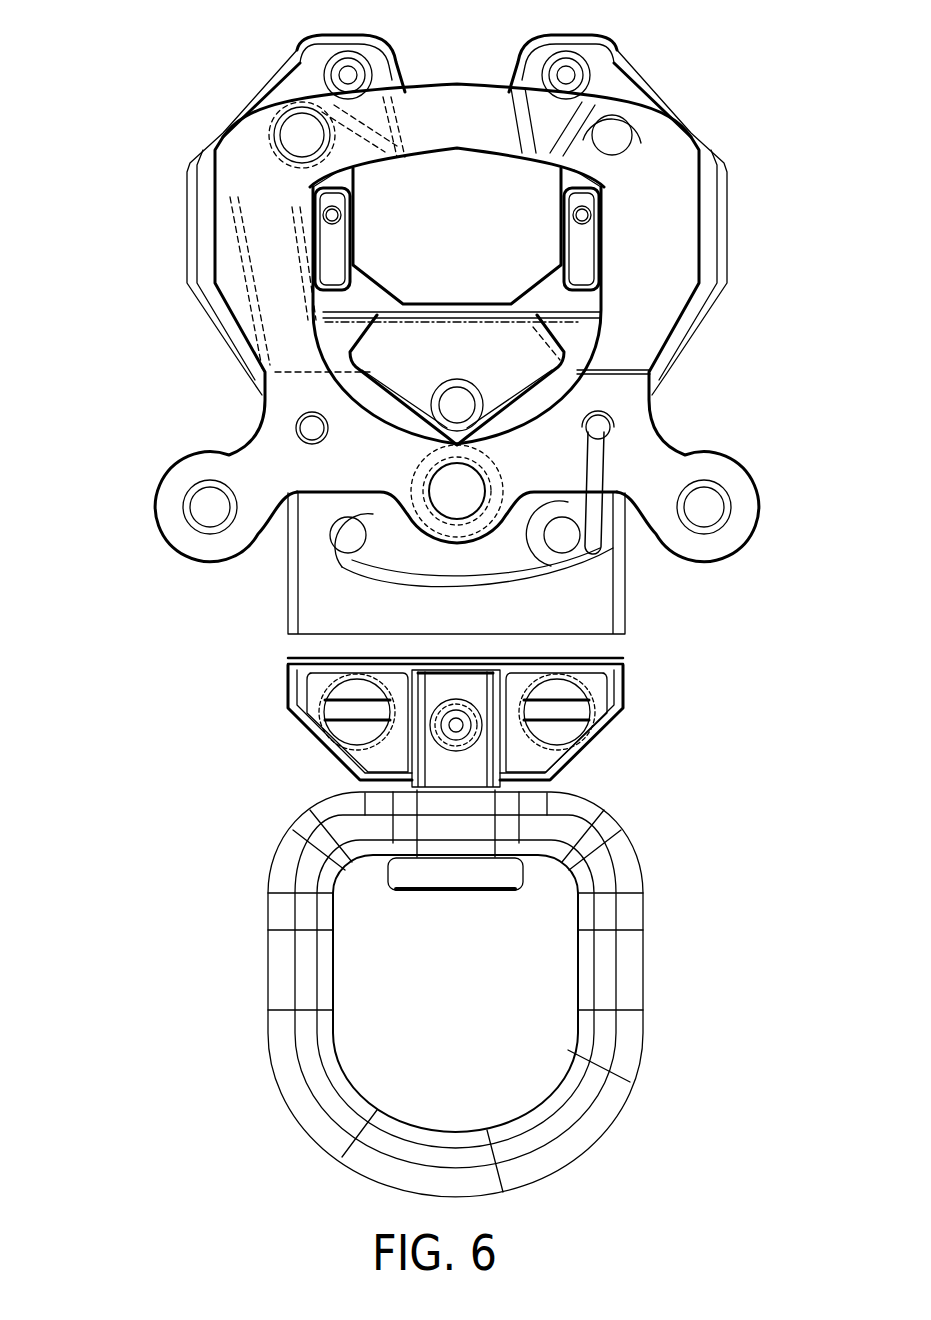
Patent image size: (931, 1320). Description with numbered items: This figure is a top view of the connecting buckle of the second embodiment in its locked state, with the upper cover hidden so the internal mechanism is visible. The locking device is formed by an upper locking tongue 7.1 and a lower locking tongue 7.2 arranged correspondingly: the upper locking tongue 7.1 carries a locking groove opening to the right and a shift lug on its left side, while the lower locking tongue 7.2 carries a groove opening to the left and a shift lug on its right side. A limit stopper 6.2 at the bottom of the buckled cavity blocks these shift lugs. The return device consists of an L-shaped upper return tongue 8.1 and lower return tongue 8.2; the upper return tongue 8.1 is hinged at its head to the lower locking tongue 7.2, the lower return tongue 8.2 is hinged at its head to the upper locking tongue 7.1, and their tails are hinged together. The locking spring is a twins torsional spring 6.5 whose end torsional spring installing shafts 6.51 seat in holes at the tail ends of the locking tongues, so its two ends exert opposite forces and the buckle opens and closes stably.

The upper locking tongue 7.1 is at (252, 129).
The lower locking tongue 7.2 is at (623, 403).
The upper return tongue 8.1 is at (623, 347).
The lower return tongue 8.2 is at (350, 335).
The torsional spring installing shaft 6.51 is at (300, 422).
The twins torsional spring 6.5 is at (580, 553).
The limit stopper 6.2 is at (627, 662).